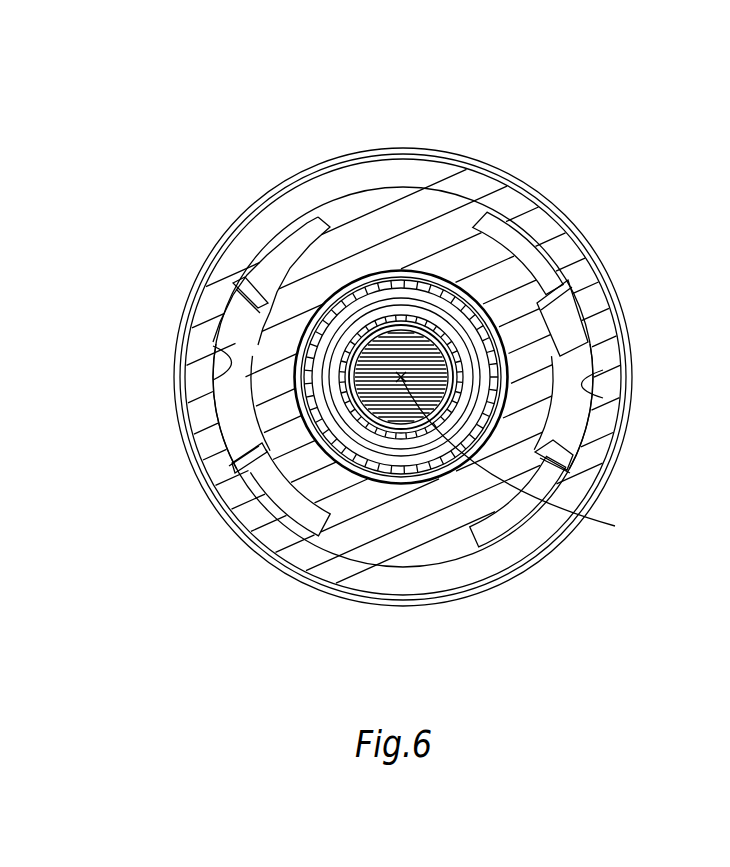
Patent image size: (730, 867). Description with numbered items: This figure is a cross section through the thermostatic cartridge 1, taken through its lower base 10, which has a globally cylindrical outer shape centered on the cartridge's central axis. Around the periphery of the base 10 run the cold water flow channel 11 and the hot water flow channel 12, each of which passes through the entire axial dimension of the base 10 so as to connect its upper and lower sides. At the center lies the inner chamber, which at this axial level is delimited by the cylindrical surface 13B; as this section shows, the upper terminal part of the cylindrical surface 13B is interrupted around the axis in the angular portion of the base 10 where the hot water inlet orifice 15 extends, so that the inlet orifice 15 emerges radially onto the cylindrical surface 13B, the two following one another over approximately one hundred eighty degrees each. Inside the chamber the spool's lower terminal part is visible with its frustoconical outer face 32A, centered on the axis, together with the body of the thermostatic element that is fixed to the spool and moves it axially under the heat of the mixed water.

The thermostatic cartridge 1 is at (192, 493).
The lower base 10 is at (388, 606).
The cold water flow channel 11 is at (583, 397).
The hot water flow channel 12 is at (262, 336).
The hot water inlet orifice 15 is at (322, 292).
The frustoconical outer face 32A is at (487, 303).
The cylindrical surface 13B is at (445, 432).